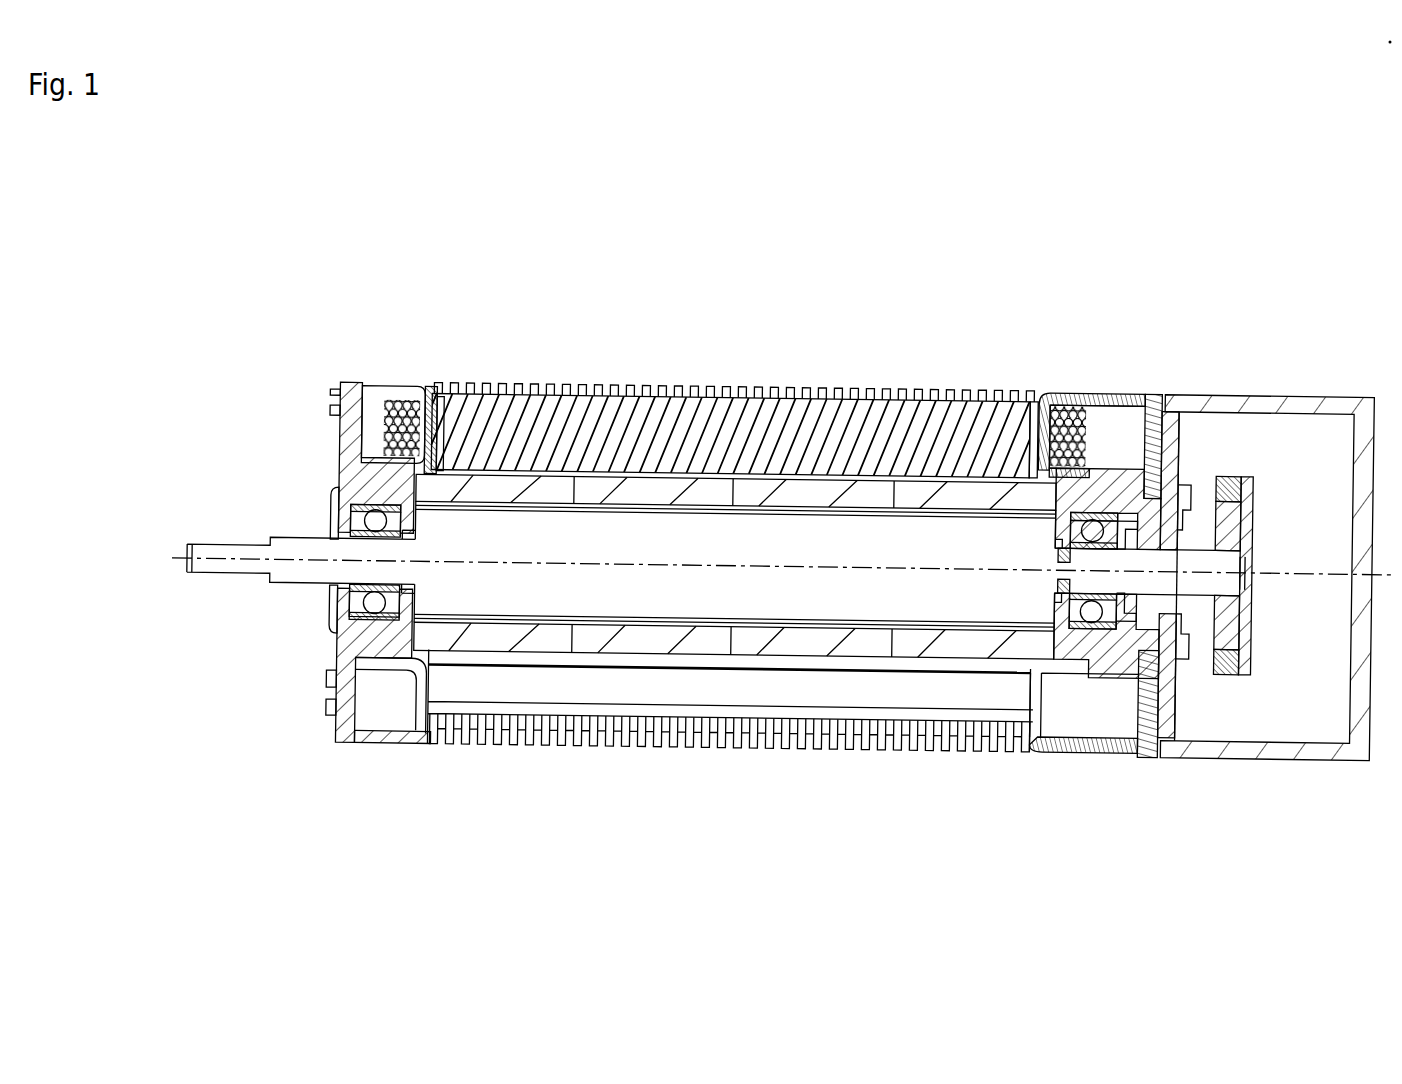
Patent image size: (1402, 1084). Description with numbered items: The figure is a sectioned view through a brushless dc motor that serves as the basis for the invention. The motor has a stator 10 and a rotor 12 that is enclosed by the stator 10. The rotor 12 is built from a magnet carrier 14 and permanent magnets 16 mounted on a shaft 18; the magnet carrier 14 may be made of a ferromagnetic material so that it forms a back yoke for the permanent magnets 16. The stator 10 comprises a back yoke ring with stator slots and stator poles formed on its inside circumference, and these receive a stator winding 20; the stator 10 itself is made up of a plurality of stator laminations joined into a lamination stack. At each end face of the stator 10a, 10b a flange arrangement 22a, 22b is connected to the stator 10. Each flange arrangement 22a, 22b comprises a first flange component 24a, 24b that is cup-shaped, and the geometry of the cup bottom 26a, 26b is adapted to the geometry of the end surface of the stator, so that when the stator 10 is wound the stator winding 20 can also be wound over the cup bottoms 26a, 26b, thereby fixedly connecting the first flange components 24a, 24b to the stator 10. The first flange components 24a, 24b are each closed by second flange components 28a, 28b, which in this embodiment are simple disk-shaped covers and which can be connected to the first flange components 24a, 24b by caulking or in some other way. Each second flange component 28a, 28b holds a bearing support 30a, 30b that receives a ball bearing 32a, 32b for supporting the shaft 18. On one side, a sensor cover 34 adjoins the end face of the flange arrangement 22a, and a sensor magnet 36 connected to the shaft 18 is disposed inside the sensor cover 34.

The stator 10 is at (538, 688).
The end face of the stator 10a is at (1034, 748).
The end face of the stator 10b is at (425, 748).
The rotor 12 is at (627, 630).
The magnet carrier 14 is at (688, 582).
The permanent magnets 16 is at (770, 631).
The shaft 18 is at (287, 582).
The stator winding 20 is at (1060, 381).
The flange arrangement 22a is at (1092, 750).
The flange arrangement 22b is at (378, 748).
The first flange component 24a is at (1101, 381).
The first flange component 24b is at (407, 383).
The cup bottom 26a is at (990, 381).
The cup bottom 26b is at (487, 379).
The second flange component 28a is at (1157, 401).
The second flange component 28b is at (340, 478).
The bearing support 30a is at (1097, 602).
The bearing support 30b is at (362, 383).
The ball bearing 32a is at (1090, 647).
The ball bearing 32b is at (337, 479).
The sensor cover 34 is at (1338, 733).
The sensor magnet 36 is at (1252, 465).